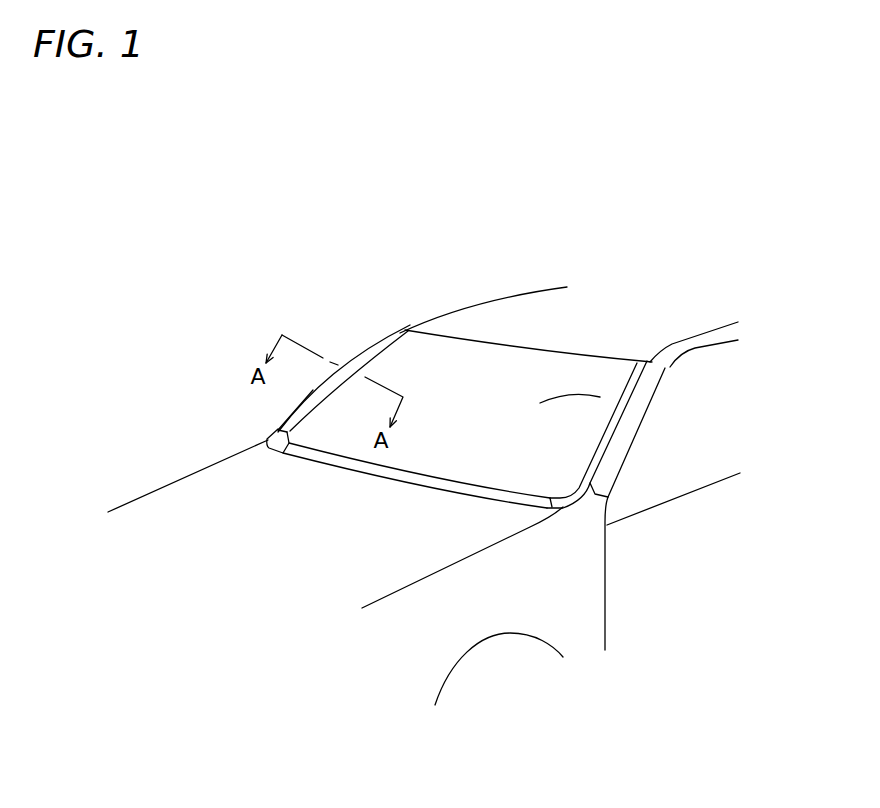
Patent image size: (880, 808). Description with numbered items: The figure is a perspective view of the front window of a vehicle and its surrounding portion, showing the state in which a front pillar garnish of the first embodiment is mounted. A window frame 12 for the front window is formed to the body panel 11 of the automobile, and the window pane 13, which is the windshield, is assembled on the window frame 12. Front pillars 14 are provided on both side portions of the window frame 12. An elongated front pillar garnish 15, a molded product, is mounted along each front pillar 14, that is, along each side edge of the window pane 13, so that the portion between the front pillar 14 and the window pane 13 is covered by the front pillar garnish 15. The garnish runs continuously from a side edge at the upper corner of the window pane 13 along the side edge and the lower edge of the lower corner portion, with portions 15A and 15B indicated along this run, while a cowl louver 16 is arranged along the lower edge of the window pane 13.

The body panel 11 is at (533, 317).
The window frame 12 is at (528, 348).
The window pane 13 is at (517, 412).
The front pillar 14 is at (620, 447).
The front pillar garnish 15 is at (385, 338).
The side molding portion 15A is at (303, 411).
The corner molding portion 15B is at (267, 449).
The cowl louver 16 is at (418, 483).